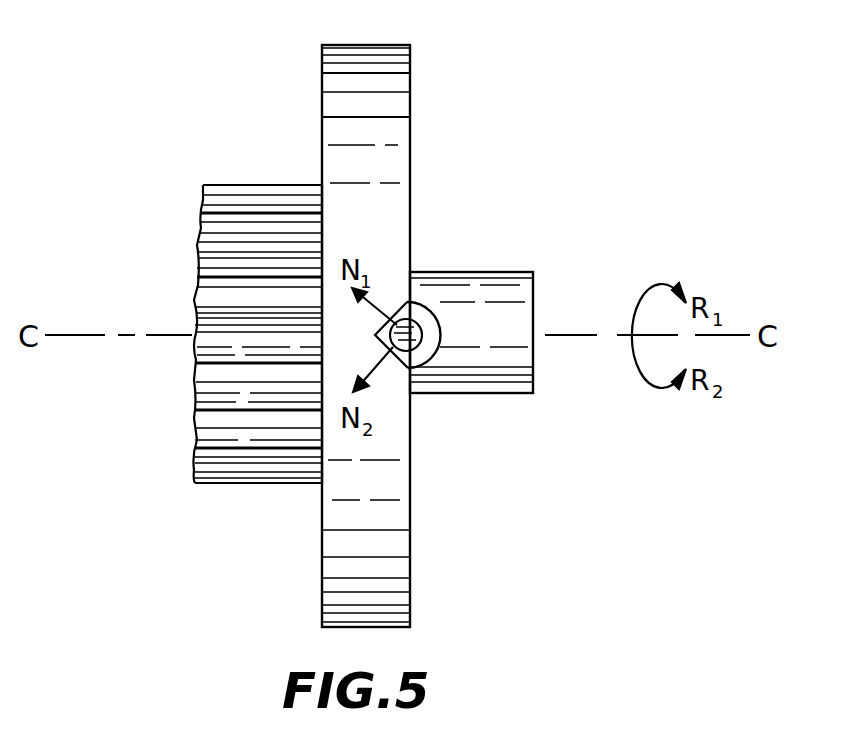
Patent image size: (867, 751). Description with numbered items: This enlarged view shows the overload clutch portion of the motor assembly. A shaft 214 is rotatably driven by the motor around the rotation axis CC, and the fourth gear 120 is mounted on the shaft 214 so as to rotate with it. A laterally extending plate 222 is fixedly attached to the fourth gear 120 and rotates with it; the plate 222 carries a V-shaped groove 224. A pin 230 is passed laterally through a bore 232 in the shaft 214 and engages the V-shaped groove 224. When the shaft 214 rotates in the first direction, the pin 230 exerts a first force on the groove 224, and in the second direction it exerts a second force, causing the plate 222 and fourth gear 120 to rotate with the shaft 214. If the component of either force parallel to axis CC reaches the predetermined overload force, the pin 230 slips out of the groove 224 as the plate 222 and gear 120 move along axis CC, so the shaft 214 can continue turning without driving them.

The fourth gear 120 is at (246, 185).
The laterally extending plate 222 is at (405, 112).
The shaft 214 is at (535, 283).
The V-shaped groove 224 is at (401, 312).
The bore 232 is at (427, 310).
The pin 230 is at (422, 352).